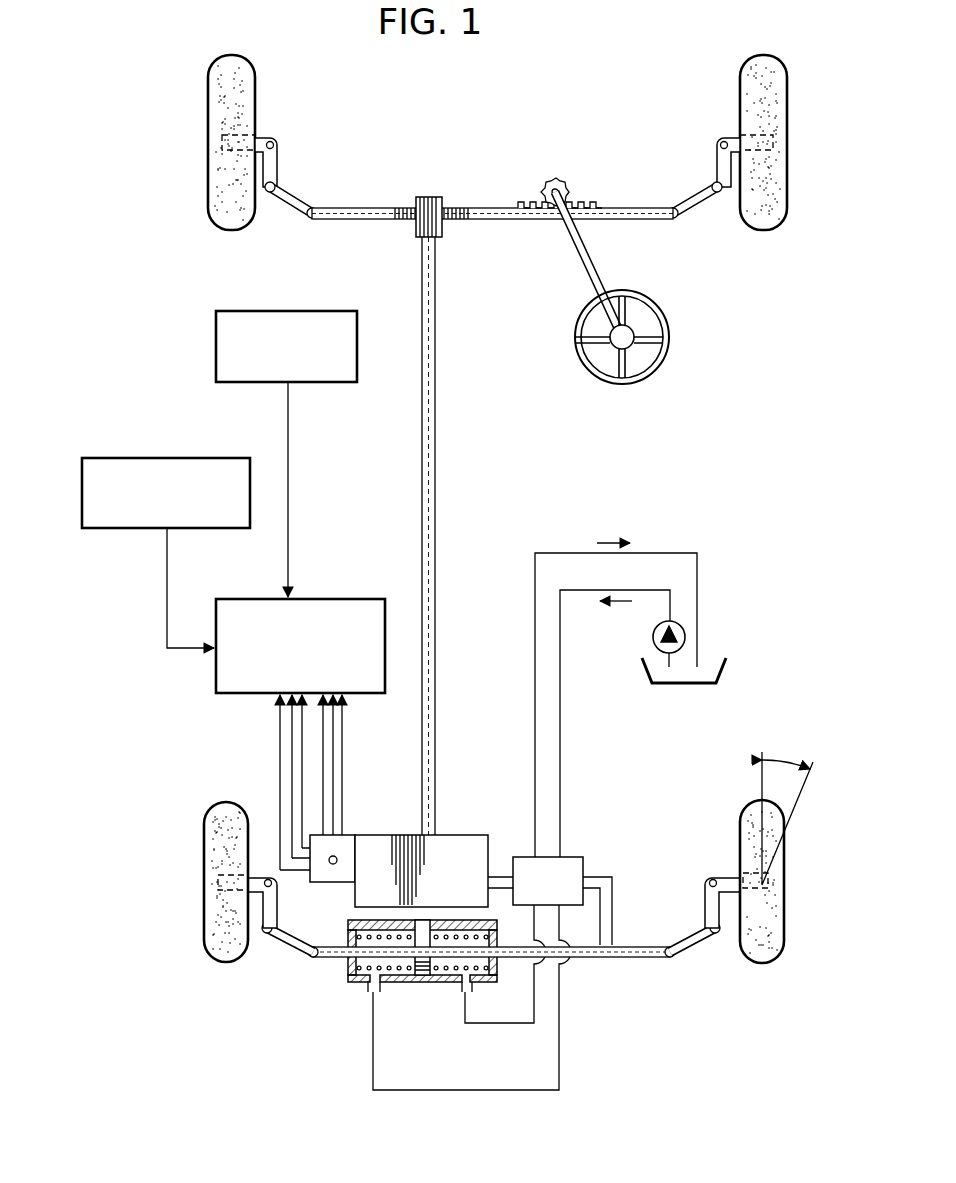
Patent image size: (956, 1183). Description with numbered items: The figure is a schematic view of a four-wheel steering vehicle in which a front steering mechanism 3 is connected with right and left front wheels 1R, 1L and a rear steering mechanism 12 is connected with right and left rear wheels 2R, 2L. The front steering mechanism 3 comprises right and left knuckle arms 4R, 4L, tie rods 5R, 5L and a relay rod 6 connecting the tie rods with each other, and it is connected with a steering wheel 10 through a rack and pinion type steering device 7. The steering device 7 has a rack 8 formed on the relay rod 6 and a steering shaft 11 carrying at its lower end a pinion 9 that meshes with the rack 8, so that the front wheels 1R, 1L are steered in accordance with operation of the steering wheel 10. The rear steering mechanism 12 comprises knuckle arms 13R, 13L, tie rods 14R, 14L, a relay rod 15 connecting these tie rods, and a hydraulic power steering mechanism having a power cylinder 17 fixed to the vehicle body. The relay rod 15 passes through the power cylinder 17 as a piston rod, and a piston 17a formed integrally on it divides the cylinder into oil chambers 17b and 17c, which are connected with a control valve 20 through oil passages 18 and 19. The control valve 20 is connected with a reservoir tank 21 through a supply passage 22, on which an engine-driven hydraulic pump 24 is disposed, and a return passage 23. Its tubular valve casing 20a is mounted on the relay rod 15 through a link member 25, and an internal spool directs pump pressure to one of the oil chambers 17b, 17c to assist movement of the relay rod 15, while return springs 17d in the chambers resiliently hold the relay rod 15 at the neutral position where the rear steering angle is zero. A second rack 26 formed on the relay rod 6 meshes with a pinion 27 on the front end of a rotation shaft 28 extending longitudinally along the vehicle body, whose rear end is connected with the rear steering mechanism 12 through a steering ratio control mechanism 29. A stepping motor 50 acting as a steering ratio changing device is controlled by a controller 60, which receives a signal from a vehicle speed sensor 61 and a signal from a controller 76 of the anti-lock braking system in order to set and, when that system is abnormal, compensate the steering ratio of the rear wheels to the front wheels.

The left front wheel 1L is at (207, 103).
The right front wheel 1R is at (740, 101).
The left rear wheel 2L is at (203, 912).
The right rear wheel 2R is at (770, 964).
The front steering mechanism 3 is at (492, 186).
The left knuckle arm 4L is at (279, 152).
The right knuckle arm 4R is at (716, 160).
The left tie rod 5L is at (292, 206).
The right tie rod 5R is at (704, 206).
The relay rod 6 is at (359, 220).
The steering device 7 is at (615, 288).
The rack 8 is at (576, 207).
The pinion 9 is at (548, 181).
The steering wheel 10 is at (665, 345).
The steering shaft 11 is at (582, 266).
The rear steering mechanism 12 is at (489, 967).
The left knuckle arm 13L is at (260, 908).
The right knuckle arm 13R is at (710, 898).
The left tie rod 14L is at (284, 942).
The right tie rod 14R is at (700, 946).
The relay rod 15 is at (606, 958).
The power cylinder 17 is at (408, 973).
The piston 17a is at (419, 934).
The oil chamber 17b is at (350, 942).
The oil chamber 17c is at (490, 966).
The return spring 17d is at (432, 978).
The oil passage 18 is at (515, 1090).
The oil passage 19 is at (500, 1023).
The control valve 20 is at (593, 859).
The valve casing 20a is at (583, 866).
The reservoir tank 21 is at (726, 665).
The supply passage 22 is at (560, 719).
The return passage 23 is at (535, 693).
The hydraulic pump 24 is at (652, 637).
The link member 25 is at (612, 925).
The rack 26 is at (461, 212).
The pinion 27 is at (417, 197).
The rotation shaft 28 is at (422, 454).
The steering ratio control mechanism 29 is at (462, 835).
The stepping motor 50 is at (350, 835).
The controller 60 is at (354, 599).
The vehicle speed sensor 61 is at (216, 352).
The controller 76 is at (134, 458).